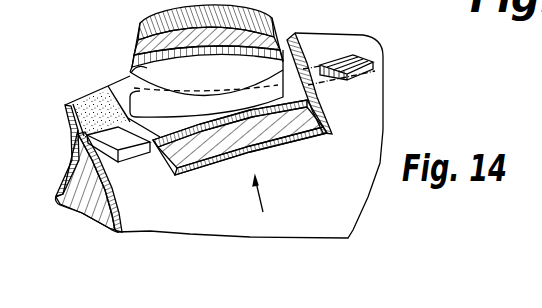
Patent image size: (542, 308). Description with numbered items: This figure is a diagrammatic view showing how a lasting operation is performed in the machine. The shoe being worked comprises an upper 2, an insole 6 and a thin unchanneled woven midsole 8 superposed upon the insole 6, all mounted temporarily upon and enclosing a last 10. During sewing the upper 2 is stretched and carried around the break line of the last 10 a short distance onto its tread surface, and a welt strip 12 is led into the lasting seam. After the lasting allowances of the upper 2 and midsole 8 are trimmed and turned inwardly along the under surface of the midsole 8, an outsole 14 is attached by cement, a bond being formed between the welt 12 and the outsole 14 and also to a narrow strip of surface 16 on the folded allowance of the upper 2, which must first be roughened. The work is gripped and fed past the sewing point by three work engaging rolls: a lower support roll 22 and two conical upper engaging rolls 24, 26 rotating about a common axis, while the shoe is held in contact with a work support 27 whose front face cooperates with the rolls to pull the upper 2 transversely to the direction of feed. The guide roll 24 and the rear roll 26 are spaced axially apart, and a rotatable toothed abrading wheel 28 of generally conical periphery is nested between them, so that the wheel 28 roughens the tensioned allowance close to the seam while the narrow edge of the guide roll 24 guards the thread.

The upper 2 is at (178, 230).
The insole 6 is at (62, 207).
The midsole 8 is at (62, 172).
The last 10 is at (80, 207).
The welt strip 12 is at (376, 71).
The outsole 14 is at (105, 202).
The strip of surface 16 is at (65, 121).
The lower support roll 22 is at (106, 87).
The guide roll 24 is at (131, 72).
The upper engaging roll 26 is at (141, 31).
The work support 27 is at (252, 97).
The abrading wheel 28 is at (134, 50).